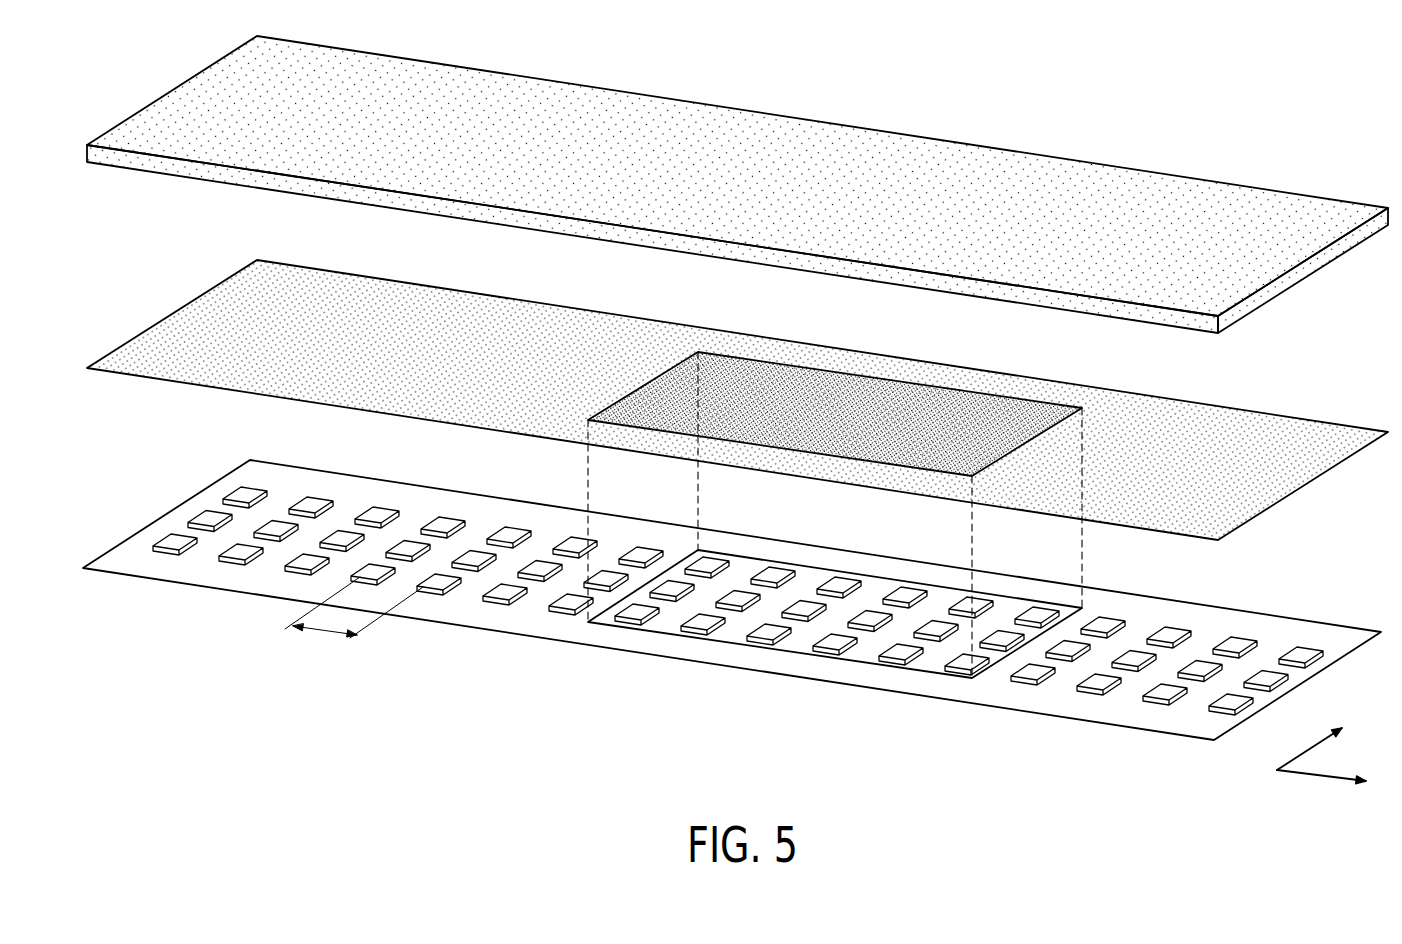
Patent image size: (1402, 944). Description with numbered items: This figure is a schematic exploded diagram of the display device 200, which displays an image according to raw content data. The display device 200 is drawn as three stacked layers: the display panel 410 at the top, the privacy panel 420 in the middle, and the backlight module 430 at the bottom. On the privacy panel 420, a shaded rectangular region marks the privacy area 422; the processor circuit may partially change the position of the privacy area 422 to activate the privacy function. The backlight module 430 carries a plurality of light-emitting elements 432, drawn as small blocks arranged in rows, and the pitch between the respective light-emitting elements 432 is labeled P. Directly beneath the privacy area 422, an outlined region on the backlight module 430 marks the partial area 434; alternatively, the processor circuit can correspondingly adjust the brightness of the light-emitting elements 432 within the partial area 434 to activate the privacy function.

The display device 200 is at (737, 419).
The display panel 410 is at (186, 97).
The privacy panel 420 is at (187, 319).
The privacy area 422 is at (1010, 415).
The backlight module 430 is at (186, 514).
The light-emitting element 432 is at (228, 546).
The partial area 434 is at (658, 632).